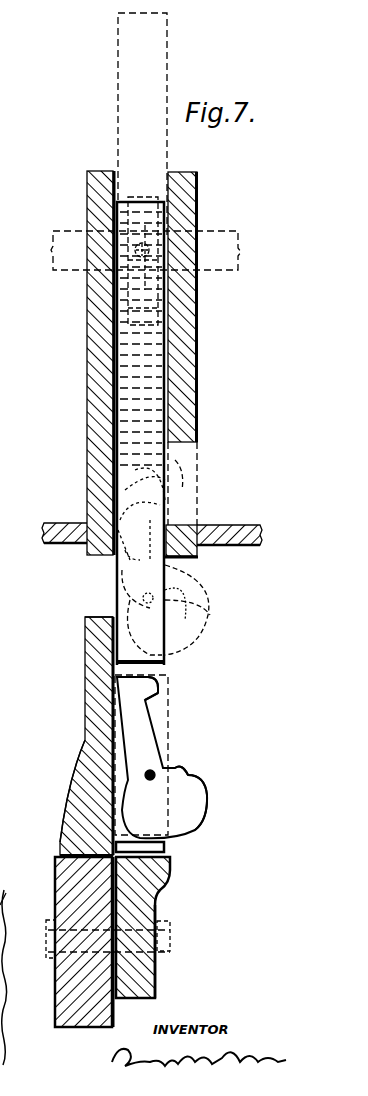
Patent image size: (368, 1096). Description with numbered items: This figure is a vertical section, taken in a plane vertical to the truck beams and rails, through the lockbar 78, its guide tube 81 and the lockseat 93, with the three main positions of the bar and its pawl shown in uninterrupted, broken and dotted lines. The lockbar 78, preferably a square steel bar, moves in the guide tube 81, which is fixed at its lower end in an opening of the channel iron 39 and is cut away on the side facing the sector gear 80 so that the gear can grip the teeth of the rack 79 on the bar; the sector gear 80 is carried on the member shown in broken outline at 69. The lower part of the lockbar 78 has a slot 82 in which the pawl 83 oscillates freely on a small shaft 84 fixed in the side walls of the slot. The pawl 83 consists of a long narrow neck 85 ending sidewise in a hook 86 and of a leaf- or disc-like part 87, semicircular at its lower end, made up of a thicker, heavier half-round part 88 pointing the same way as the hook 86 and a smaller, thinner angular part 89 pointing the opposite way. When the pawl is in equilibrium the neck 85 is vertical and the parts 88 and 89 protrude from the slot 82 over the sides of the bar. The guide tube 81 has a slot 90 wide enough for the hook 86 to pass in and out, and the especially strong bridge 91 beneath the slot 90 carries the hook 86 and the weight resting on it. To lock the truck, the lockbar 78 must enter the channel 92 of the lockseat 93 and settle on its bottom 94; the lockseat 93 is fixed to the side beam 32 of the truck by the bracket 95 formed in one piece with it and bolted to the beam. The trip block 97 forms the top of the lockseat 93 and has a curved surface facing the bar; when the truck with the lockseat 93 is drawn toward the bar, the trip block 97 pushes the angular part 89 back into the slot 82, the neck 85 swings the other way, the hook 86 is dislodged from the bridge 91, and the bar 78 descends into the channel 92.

The lockbar 78 is at (118, 88).
The guide tube 81 is at (198, 192).
The rack 79 is at (117, 327).
The sector gear 80 is at (128, 274).
The arm 69 is at (242, 253).
The slot 90 is at (197, 469).
The channel iron 39 is at (50, 523).
The bridge 91 is at (198, 553).
The trip block 97 is at (85, 631).
The lockseat 93 is at (85, 717).
The slot 82 is at (166, 713).
The hook 86 is at (158, 685).
The neck 85 is at (147, 702).
The small shaft 84 is at (160, 764).
The pawl 83 is at (200, 764).
The half-round part 88 is at (207, 792).
The leaf- or disc-like part 87 is at (205, 817).
The angular part 89 is at (113, 820).
The channel 92 is at (113, 836).
The side beam 32 is at (55, 1014).
The bottom 94 is at (170, 869).
The bracket 95 is at (156, 976).